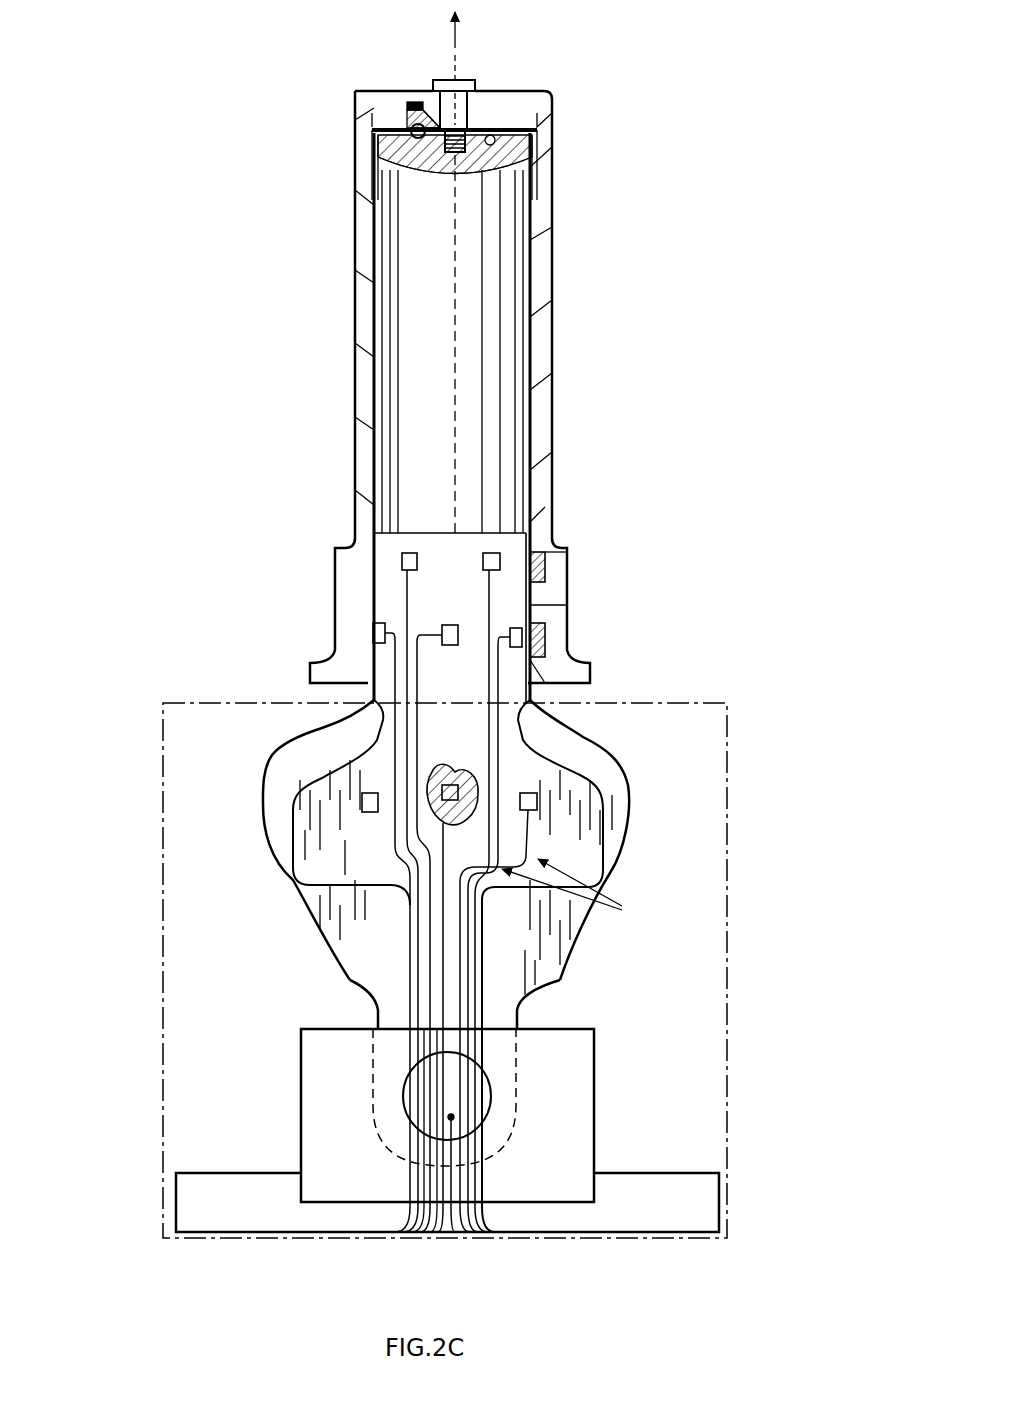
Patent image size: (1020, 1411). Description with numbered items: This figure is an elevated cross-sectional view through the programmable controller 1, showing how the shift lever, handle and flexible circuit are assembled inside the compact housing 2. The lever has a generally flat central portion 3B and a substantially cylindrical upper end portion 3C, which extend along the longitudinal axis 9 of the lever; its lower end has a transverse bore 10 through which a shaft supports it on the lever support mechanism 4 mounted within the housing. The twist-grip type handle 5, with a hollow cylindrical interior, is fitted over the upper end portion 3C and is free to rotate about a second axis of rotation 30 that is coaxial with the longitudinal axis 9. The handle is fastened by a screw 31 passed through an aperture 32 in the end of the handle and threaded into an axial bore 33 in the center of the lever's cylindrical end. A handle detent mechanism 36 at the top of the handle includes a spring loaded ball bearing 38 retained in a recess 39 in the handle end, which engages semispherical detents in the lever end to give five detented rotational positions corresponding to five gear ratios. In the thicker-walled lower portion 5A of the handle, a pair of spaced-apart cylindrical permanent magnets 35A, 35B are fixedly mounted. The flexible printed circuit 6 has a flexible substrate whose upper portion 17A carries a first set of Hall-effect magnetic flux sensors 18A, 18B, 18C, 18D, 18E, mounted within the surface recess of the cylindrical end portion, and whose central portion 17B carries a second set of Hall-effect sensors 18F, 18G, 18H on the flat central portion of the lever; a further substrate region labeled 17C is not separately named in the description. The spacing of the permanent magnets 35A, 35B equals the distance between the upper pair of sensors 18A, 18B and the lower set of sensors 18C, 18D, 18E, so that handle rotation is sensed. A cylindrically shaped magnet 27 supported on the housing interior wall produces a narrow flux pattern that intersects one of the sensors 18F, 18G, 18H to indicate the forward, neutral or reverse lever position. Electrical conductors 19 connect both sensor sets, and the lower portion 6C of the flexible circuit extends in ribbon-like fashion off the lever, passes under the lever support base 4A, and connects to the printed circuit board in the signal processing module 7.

The programmable controller 1 is at (186, 1274).
The compact housing 2 is at (728, 926).
The central portion 3B is at (555, 969).
The upper end portion 3C is at (400, 446).
The lever support mechanism 4 is at (560, 1098).
The lever support base 4A is at (594, 1121).
The twist-grip type handle 5 is at (552, 256).
The lower portion of the handle 5A is at (552, 595).
The flexible printed circuit 6 is at (302, 887).
The lower portion of the flexible printed circuit 6C is at (450, 1174).
The signal processing module 7 is at (230, 1176).
The longitudinal axis 9 is at (455, 46).
The transverse bore 10 is at (405, 1084).
The upper portion of the substrate 17A is at (457, 540).
The central portion of the substrate 17B is at (313, 843).
The neck passage 17C is at (380, 986).
The Hall-effect type magnetic flux sensor 18A is at (403, 561).
The Hall-effect type magnetic flux sensor 18B is at (500, 559).
The Hall-effect type magnetic flux sensor 18C is at (373, 633).
The Hall-effect type magnetic flux sensor 18D is at (440, 633).
The Hall-effect type magnetic flux sensor 18E is at (532, 612).
The Hall-effect type magnetic flux sensor 18F is at (360, 803).
The Hall-effect type magnetic flux sensor 18G is at (477, 783).
The Hall-effect type magnetic flux sensor 18H is at (540, 801).
The electrical conductors 19 is at (568, 966).
The cylindrically shaped magnet 27 is at (432, 782).
The second axis of rotation 30 is at (458, 70).
The screw 31 is at (468, 108).
The aperture 32 is at (405, 102).
The axial bore 33 is at (430, 166).
The permanent magnet 35A is at (545, 558).
The permanent magnet 35B is at (545, 642).
The handle detent mechanism 36 is at (578, 136).
The spring loaded ball bearing 38 is at (385, 158).
The recess 39 is at (410, 122).